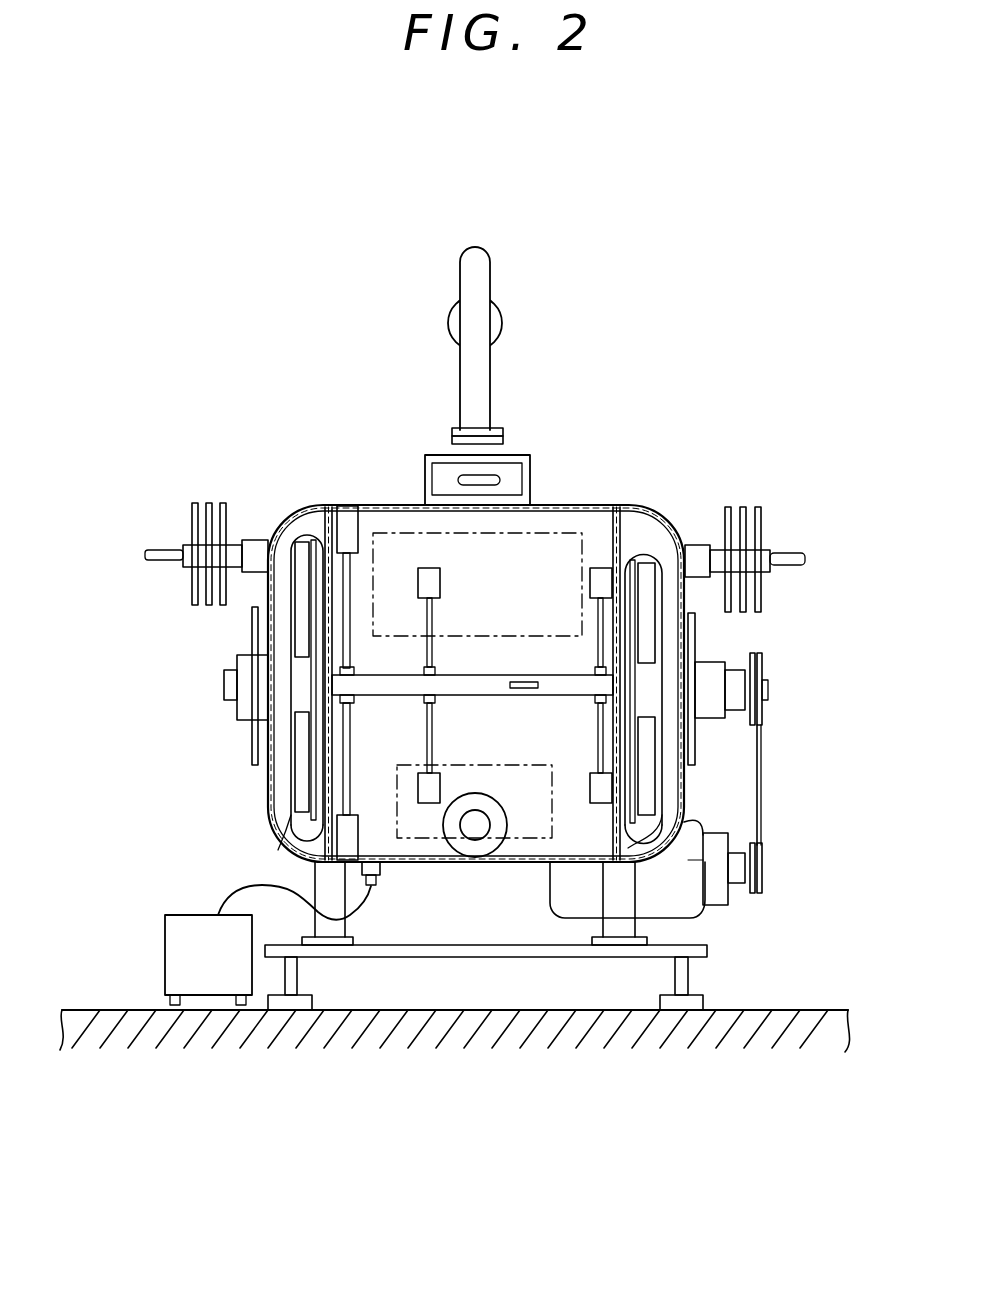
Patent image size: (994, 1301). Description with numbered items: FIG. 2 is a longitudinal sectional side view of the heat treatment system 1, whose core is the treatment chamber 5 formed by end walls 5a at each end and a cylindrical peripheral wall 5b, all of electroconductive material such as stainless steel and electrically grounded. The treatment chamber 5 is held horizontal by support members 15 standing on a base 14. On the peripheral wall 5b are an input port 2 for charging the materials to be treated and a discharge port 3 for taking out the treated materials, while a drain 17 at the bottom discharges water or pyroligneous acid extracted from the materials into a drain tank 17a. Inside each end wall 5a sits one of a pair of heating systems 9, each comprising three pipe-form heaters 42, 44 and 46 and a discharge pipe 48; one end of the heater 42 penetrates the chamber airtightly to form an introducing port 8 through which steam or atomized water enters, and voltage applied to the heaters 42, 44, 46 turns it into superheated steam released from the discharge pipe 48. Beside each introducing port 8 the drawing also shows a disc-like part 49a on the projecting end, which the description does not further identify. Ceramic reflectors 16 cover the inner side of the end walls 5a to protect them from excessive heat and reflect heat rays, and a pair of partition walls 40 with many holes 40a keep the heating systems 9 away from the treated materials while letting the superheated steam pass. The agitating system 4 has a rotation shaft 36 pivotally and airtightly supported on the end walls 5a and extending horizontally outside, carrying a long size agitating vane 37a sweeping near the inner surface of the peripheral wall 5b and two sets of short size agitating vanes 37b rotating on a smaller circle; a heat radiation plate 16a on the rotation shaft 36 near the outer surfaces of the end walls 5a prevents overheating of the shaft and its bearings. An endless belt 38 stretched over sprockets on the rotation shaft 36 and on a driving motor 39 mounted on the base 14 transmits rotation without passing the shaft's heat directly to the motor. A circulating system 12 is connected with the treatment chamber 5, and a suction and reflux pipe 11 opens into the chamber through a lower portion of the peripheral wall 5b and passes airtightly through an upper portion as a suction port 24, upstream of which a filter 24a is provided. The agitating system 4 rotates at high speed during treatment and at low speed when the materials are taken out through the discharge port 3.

The heat treatment system 1 is at (405, 258).
The input port 2 is at (399, 535).
The discharge port 3 is at (524, 843).
The agitating system 4 is at (518, 702).
The treatment chamber 5 is at (447, 863).
The end wall 5a is at (278, 790).
The peripheral wall 5b is at (410, 864).
The introducing port 8 is at (183, 558).
The heating system 9 is at (280, 540).
The suction and reflux pipe 11 is at (480, 258).
The circulating system 12 is at (512, 316).
The base 14 is at (483, 958).
The support member 15 is at (340, 925).
The ceramic reflector 16 is at (283, 760).
The heat radiation plate 16a is at (240, 745).
The drain 17 is at (373, 890).
The drain tank 17a is at (168, 945).
The suction port 24 is at (472, 445).
The filter 24a is at (442, 475).
The rotation shaft 36 is at (470, 680).
The long size agitating vane 37a is at (352, 530).
The short size agitating vane 37b is at (440, 582).
The endless belt 38 is at (758, 735).
The driving motor 39 is at (695, 865).
The partition wall 40 is at (335, 720).
The hole 40a is at (335, 775).
The heater 42 is at (285, 572).
The heater 44 is at (300, 820).
The heater 46 is at (298, 550).
The discharge pipe 48 is at (320, 540).
The pulley discs 49a is at (206, 600).